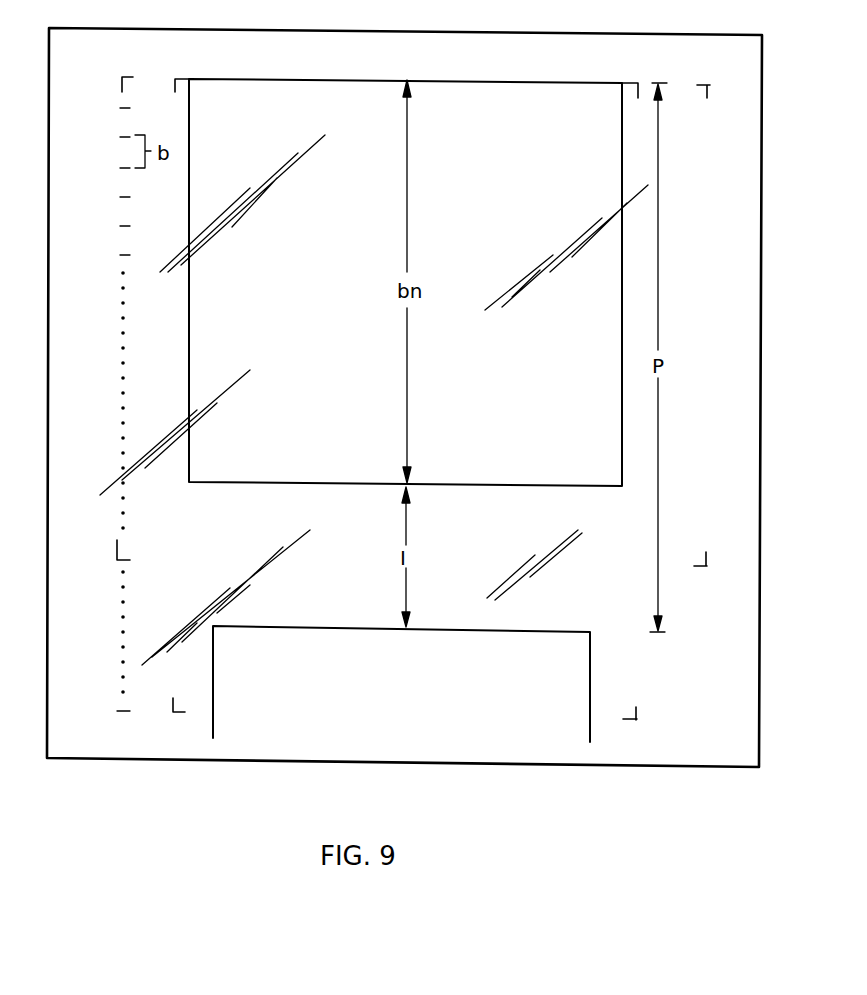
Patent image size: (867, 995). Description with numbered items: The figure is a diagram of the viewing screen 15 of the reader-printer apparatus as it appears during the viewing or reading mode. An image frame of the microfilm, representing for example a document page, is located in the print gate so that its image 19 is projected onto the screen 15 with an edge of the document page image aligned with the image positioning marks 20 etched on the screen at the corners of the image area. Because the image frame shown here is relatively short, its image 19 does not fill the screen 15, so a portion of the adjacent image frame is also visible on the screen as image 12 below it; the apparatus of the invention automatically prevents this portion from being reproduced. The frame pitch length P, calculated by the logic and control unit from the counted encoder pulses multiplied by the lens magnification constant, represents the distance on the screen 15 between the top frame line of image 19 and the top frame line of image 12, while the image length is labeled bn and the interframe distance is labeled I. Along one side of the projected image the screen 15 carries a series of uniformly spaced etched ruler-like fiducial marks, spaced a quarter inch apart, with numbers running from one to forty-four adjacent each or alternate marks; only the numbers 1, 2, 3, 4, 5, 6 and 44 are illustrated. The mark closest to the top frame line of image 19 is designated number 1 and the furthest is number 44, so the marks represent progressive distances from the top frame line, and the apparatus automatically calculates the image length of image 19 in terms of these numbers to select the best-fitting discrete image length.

The screen 15 is at (455, 32).
The image 19 is at (355, 80).
The image positioning marks 20 is at (125, 75).
The image 12 is at (302, 625).
The number 1 is at (115, 103).
The number 2 is at (114, 133).
The number 3 is at (114, 163).
The number 4 is at (114, 191).
The number 5 is at (114, 222).
The number 6 is at (114, 251).
The number 44 is at (107, 706).